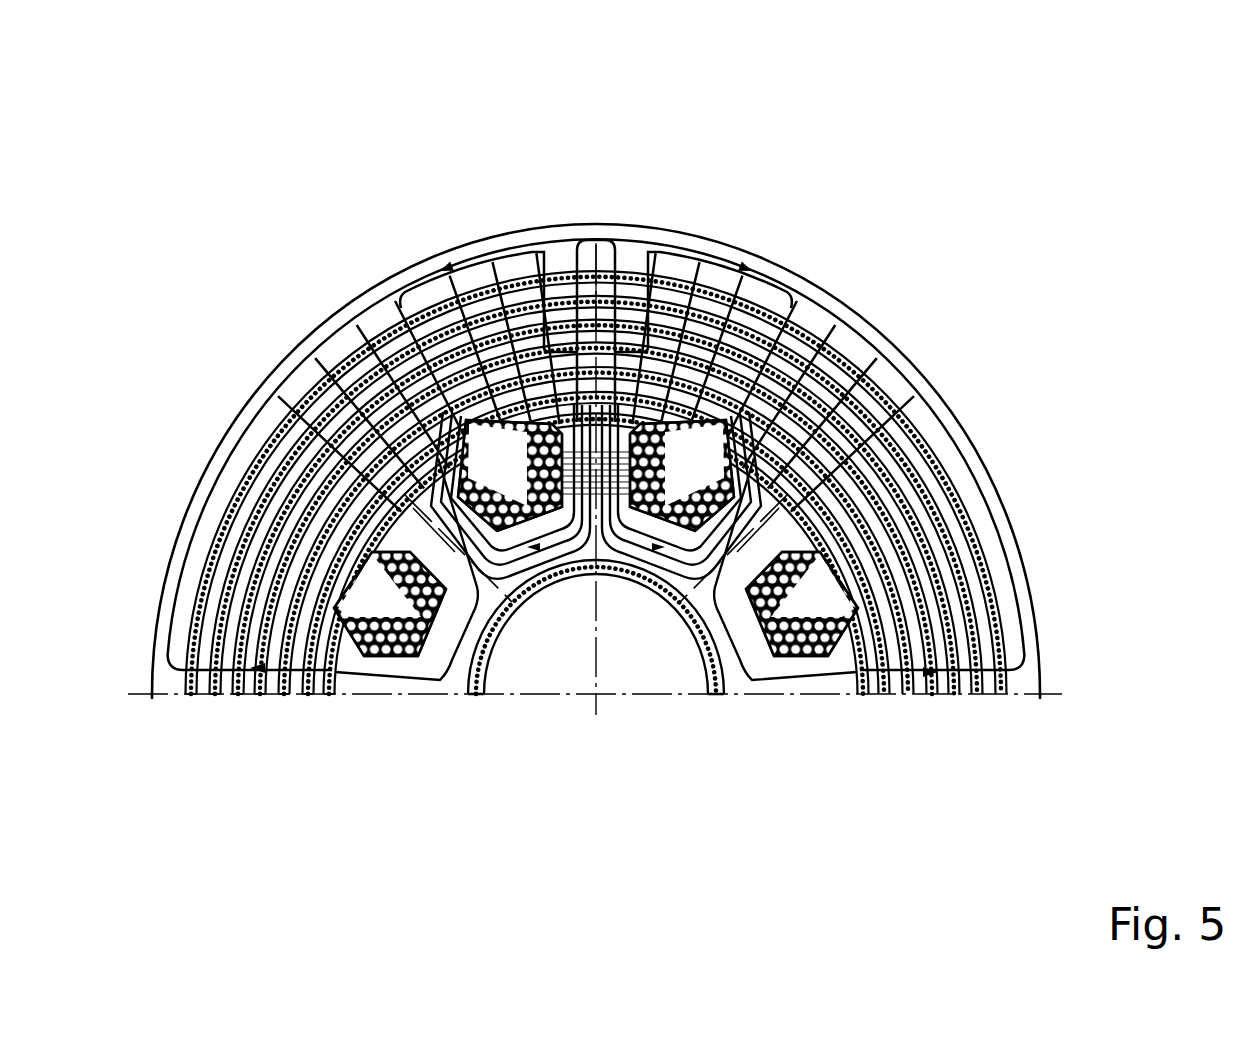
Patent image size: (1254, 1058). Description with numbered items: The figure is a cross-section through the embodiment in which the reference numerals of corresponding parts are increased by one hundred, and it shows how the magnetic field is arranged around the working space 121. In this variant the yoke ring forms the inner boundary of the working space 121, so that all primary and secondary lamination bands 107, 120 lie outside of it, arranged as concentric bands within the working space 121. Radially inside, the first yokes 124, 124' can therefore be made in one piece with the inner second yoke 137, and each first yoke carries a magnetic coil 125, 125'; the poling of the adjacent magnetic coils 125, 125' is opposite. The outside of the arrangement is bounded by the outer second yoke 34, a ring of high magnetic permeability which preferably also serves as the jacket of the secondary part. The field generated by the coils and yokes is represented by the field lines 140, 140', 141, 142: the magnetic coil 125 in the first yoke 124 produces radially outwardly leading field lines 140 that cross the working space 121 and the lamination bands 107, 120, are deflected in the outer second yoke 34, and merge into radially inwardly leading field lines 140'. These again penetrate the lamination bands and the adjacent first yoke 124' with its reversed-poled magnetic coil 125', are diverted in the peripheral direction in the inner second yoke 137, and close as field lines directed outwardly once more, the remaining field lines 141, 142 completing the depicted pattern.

The outer second yoke 34 is at (597, 243).
The field lines 140 is at (450, 293).
The field lines 140' is at (827, 293).
The first yoke 124 is at (588, 320).
The magnetic coil 125 is at (617, 327).
The first yoke 124' is at (909, 485).
The magnetic coil 125' is at (905, 492).
The field lines 141 is at (783, 292).
The secondary lamination band 120 is at (952, 610).
The primary lamination band 107 is at (977, 647).
The working space 121 is at (290, 690).
The inner second yoke 137 is at (538, 563).
The field lines 142 is at (668, 547).